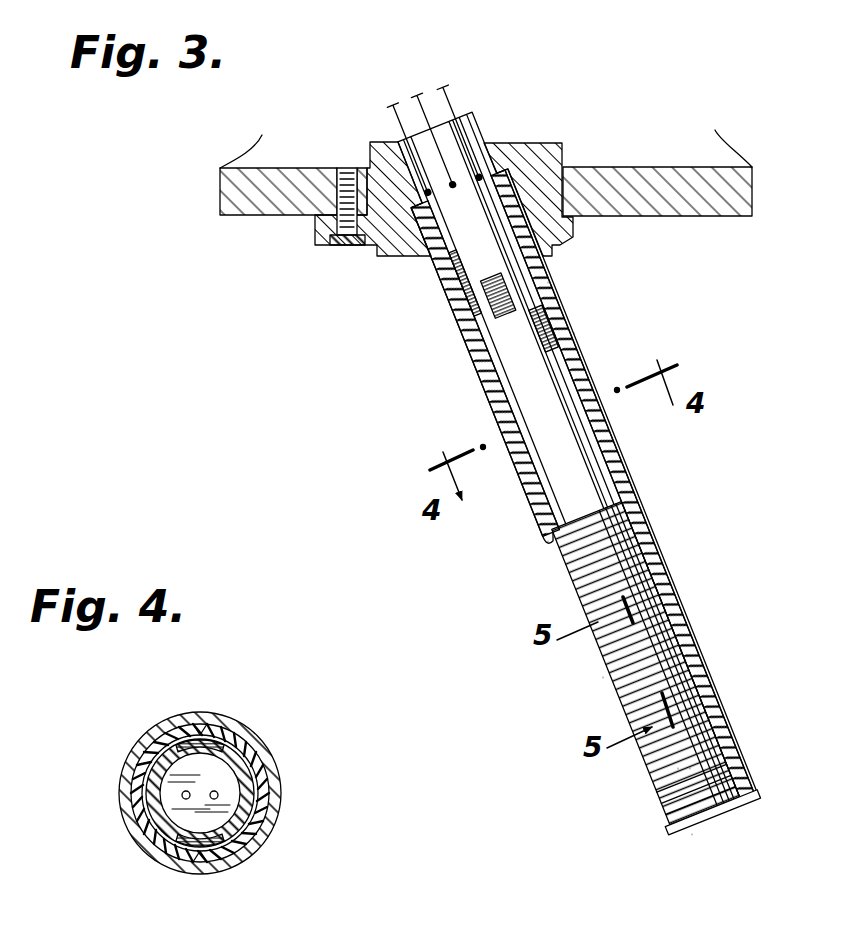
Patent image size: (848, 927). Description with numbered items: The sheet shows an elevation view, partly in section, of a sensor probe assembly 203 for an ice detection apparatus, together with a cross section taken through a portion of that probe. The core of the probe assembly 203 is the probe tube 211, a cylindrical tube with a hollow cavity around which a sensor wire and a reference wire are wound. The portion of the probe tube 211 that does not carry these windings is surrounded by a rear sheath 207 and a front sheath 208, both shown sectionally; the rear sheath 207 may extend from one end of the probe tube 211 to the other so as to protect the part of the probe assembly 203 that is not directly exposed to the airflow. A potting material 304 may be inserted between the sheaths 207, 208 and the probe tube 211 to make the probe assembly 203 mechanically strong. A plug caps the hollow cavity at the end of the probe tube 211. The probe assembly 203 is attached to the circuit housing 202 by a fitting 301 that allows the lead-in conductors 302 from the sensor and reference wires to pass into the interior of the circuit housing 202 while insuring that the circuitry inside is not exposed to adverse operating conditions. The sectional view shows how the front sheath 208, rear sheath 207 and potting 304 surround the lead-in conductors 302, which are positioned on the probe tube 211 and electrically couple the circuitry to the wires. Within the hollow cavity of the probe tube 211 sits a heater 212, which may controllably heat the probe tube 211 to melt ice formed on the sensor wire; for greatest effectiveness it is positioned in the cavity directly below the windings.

In FIG. 3, the circuit housing 202 is at (722, 216).
In FIG. 3, the probe assembly 203 is at (396, 390).
In FIG. 4, the rear sheath 207 is at (264, 830).
In FIG. 4, the front sheath 208 is at (133, 826).
In FIG. 4, the probe tube 211 is at (222, 733).
In FIG. 4, the heater 212 is at (222, 786).
In FIG. 3, the fitting 301 is at (405, 250).
In FIG. 4, the lead-in conductors 302 is at (152, 740).
In FIG. 4, the potting material 304 is at (163, 865).